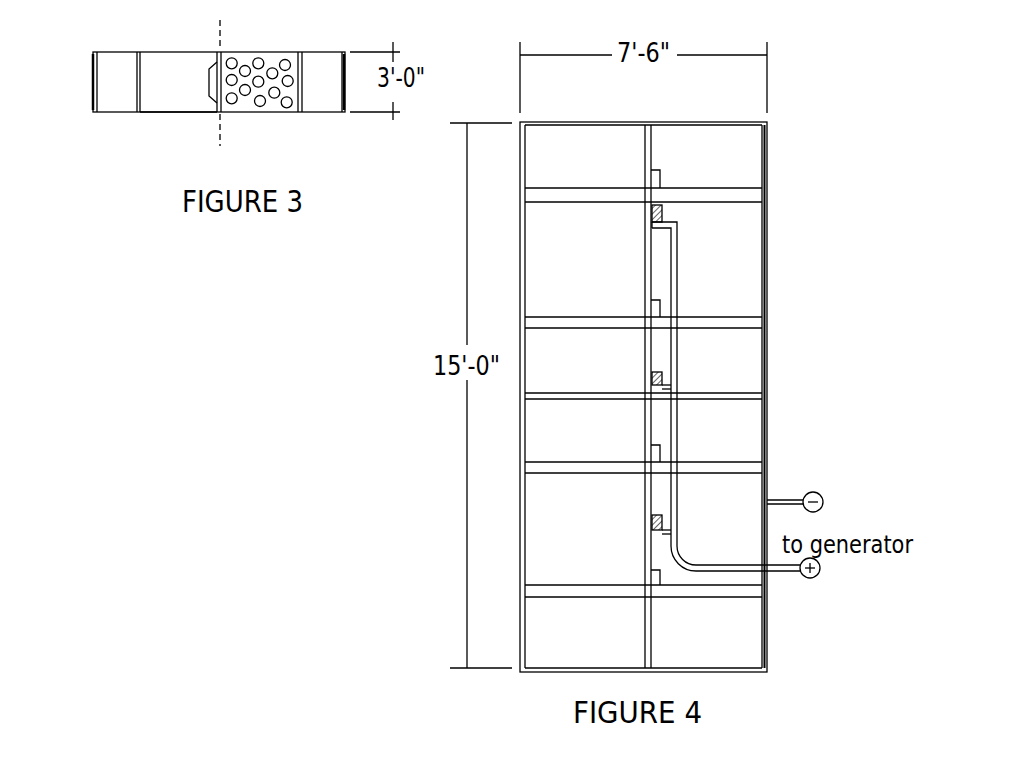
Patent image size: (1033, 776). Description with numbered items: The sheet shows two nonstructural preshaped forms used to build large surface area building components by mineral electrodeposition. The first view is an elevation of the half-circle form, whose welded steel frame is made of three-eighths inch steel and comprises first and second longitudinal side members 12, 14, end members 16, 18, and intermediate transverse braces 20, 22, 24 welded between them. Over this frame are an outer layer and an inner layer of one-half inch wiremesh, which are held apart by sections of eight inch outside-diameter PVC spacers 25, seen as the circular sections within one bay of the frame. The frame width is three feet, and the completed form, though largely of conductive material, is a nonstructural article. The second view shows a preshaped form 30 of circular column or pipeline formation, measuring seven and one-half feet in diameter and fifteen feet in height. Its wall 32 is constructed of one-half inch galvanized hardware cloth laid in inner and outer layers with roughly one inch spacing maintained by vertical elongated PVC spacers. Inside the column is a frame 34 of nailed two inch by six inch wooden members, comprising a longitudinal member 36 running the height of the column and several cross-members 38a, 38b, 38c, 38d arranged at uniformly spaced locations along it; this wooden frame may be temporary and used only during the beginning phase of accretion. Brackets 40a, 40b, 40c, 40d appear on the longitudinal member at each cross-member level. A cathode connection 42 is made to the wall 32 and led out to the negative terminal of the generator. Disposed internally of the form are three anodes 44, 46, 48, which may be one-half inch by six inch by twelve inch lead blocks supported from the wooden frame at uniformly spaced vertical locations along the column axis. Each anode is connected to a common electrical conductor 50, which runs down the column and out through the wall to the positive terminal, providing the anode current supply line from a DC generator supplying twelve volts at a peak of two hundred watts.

In FIG. 3, the first longitudinal side member 12 is at (192, 51).
In FIG. 3, the second longitudinal side member 14 is at (172, 113).
In FIG. 3, the end member 16 is at (347, 58).
In FIG. 3, the end member 18 is at (93, 75).
In FIG. 3, the intermediate transverse brace 20 is at (302, 52).
In FIG. 3, the intermediate transverse brace 22 is at (223, 57).
In FIG. 3, the intermediate transverse brace 24 is at (138, 62).
In FIG. 3, the PVC spacers 25 is at (260, 104).
In FIG. 4, the preshaped form 30 is at (509, 117).
In FIG. 4, the wall 32 is at (768, 155).
In FIG. 4, the frame 34 is at (643, 196).
In FIG. 4, the longitudinal member 36 is at (652, 140).
In FIG. 4, the shelf 38a is at (618, 193).
In FIG. 4, the shelf 38b is at (623, 322).
In FIG. 4, the shelf 38c is at (622, 467).
In FIG. 4, the shelf 38d is at (628, 595).
In FIG. 4, the battery 40a is at (666, 171).
In FIG. 4, the battery 40b is at (660, 305).
In FIG. 4, the battery 40c is at (660, 450).
In FIG. 4, the battery 40d is at (662, 570).
In FIG. 4, the cathode connection 42 is at (772, 498).
In FIG. 4, the anode 44 is at (663, 213).
In FIG. 4, the anode 46 is at (663, 377).
In FIG. 4, the anode 48 is at (663, 523).
In FIG. 4, the common electrical conductor 50 is at (686, 268).